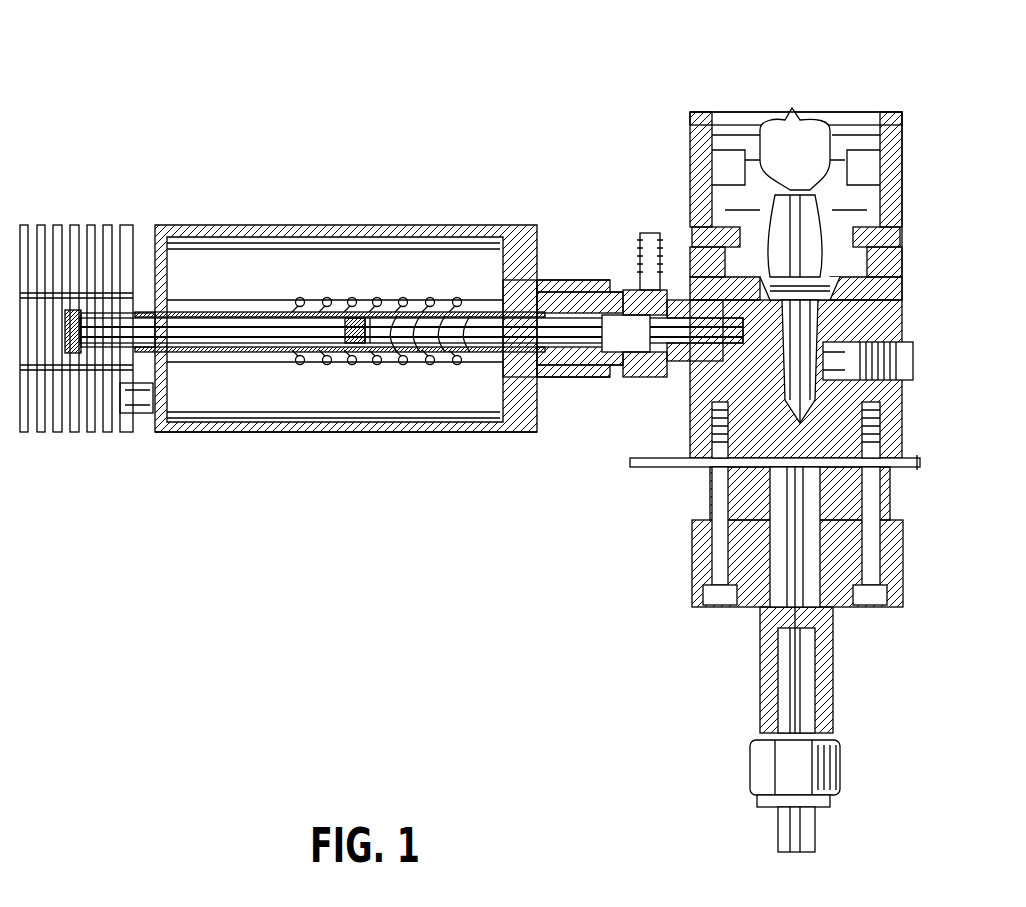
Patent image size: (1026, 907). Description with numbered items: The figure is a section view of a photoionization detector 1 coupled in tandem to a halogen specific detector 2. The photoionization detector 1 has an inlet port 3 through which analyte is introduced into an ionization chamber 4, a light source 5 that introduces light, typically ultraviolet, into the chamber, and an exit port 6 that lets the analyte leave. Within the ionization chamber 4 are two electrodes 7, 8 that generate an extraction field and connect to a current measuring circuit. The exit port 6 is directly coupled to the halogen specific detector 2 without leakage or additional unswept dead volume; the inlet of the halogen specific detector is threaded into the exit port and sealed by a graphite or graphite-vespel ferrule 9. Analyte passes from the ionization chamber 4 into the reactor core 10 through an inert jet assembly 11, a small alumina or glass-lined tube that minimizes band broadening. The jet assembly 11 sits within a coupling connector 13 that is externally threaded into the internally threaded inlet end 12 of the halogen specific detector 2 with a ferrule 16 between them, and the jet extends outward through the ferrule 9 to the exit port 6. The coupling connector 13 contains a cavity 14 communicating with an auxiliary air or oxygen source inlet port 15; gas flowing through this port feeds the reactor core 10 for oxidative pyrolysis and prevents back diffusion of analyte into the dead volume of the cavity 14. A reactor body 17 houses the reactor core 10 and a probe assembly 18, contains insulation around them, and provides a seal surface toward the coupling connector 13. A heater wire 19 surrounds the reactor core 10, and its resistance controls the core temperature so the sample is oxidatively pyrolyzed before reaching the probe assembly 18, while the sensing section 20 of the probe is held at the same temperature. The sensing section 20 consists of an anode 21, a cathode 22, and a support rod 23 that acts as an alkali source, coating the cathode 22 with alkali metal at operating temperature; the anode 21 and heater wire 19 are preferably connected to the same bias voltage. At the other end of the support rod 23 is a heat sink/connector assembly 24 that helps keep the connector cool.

The photoionization detector 1 is at (710, 660).
The halogen specific detector 2 is at (245, 462).
The inlet port 3 is at (780, 832).
The ionization chamber 4 is at (780, 358).
The light source 5 is at (805, 143).
The exit port 6 is at (778, 130).
The electrode 7 is at (780, 413).
The electrode 8 is at (730, 503).
The ferrule 9 is at (680, 270).
The reactor core 10 is at (310, 312).
The jet assembly 11 is at (553, 292).
The inlet end 12 is at (576, 280).
The coupling connector 13 is at (688, 362).
The cavity 14 is at (615, 315).
The auxiliary air or oxygen source inlet port 15 is at (645, 240).
The ferrule 16 is at (503, 228).
The reactor body 17 is at (418, 226).
The probe assembly 18 is at (250, 355).
The heater wire 19 is at (312, 368).
The sensing section 20 is at (350, 318).
The anode 21 is at (378, 300).
The cathode 22 is at (370, 352).
The support rod 23 is at (250, 318).
The heat sink/connector assembly 24 is at (65, 440).